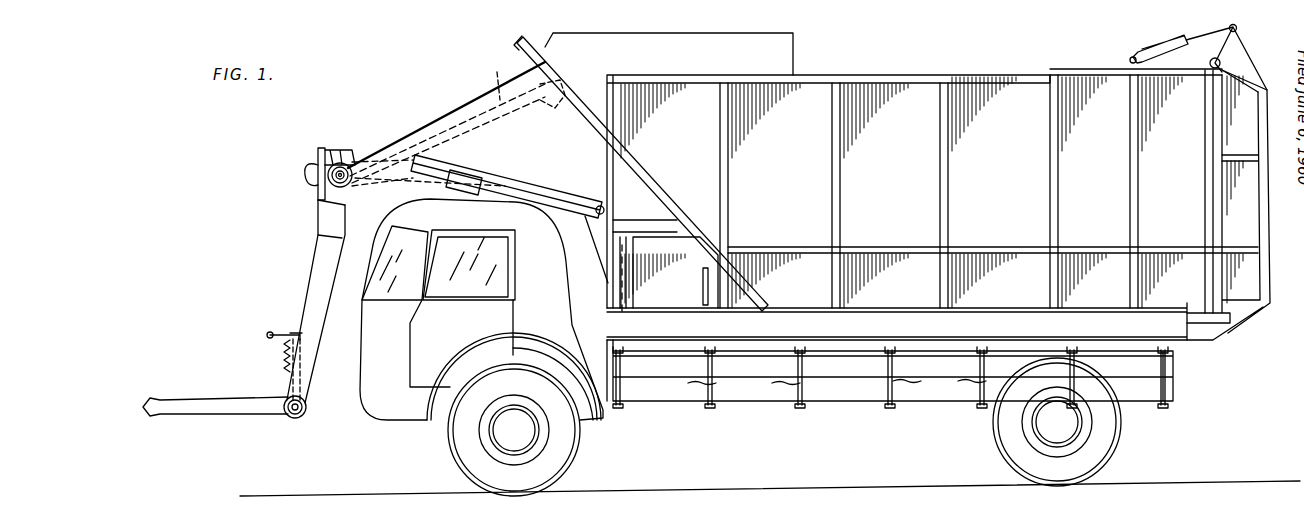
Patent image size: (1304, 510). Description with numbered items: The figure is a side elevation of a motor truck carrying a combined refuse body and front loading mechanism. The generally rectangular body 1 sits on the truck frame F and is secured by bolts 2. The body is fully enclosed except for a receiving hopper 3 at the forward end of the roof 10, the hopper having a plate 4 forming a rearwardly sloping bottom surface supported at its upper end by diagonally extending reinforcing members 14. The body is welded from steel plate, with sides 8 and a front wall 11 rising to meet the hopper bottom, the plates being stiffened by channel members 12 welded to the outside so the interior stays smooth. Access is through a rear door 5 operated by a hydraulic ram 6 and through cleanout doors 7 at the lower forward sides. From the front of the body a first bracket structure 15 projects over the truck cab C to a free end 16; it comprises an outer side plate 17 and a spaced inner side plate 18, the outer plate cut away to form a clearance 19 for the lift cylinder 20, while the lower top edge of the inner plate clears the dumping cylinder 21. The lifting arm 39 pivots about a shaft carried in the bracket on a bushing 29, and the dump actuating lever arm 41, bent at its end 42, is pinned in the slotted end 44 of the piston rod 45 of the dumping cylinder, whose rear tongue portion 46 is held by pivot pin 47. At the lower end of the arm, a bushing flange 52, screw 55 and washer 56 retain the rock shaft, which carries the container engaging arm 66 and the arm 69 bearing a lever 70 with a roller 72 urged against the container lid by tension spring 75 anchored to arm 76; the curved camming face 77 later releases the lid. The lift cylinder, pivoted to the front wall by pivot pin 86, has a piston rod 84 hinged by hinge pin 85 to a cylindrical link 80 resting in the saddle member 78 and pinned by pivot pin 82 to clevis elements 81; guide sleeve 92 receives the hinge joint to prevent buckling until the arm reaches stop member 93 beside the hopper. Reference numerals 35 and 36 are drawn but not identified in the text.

The body 1 is at (1000, 77).
The bolts 2 is at (837, 382).
The receiving hopper 3 is at (775, 33).
The plate 4 is at (580, 113).
The rear door 5 is at (1250, 313).
The hydraulic ram 6 is at (1165, 47).
The cleanout doors 7 is at (682, 266).
The sides 8 is at (812, 83).
The roof 10 is at (880, 78).
The front wall 11 is at (602, 300).
The channel members 12 is at (1048, 94).
The diagonally extending reinforcing members 14 is at (641, 153).
The first bracket structure 15 is at (440, 119).
The free end 16 is at (305, 180).
The outer side plate 17 is at (460, 107).
The inner side plate 18 is at (597, 250).
The clearance 19 is at (512, 180).
The lift cylinder 20 is at (560, 192).
The dumping cylinder 21 is at (490, 79).
The bushing 29 is at (353, 176).
The pivot pin 35 is at (345, 195).
The bearing 36 is at (352, 185).
The lifting arm 39 is at (310, 258).
The dump actuating lever arm 41 is at (315, 200).
The right-angle bent end 42 is at (302, 168).
The slotted end 44 is at (310, 166).
The piston rod 45 is at (400, 135).
The tongue portion 46 is at (545, 85).
The pivot pin 47 is at (548, 100).
The flange 52 is at (307, 407).
The screw 55 is at (295, 418).
The washer 56 is at (305, 414).
The container engaging arm 66 is at (222, 410).
The arm 69 is at (305, 380).
The lever 70 is at (276, 333).
The roller 72 is at (265, 336).
The tension spring 75 is at (280, 355).
The arm 76 is at (285, 372).
The camming face 77 is at (305, 342).
The saddle member 78 is at (333, 150).
The link 80 is at (318, 152).
The clevis elements 81 is at (320, 230).
The pivot pin 82 is at (318, 215).
The piston rod 84 is at (350, 155).
The hinge pin 85 is at (322, 148).
The pivot pin 86 is at (604, 210).
The guide sleeve 92 is at (462, 172).
The stop member 93 is at (525, 43).
The truck cab C is at (387, 421).
The frame F is at (855, 405).